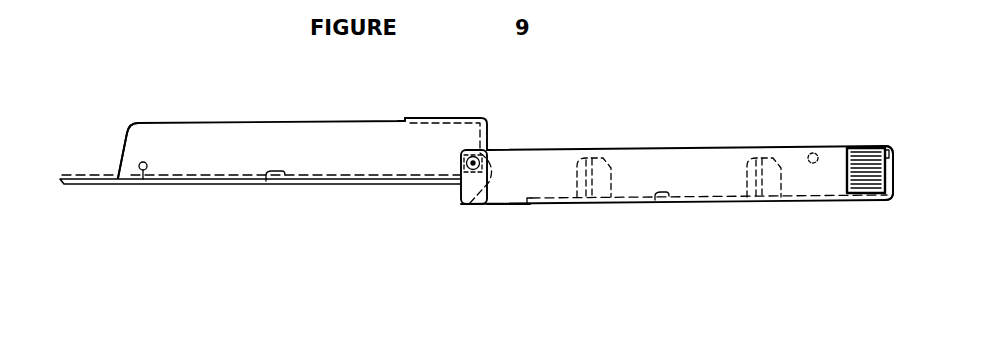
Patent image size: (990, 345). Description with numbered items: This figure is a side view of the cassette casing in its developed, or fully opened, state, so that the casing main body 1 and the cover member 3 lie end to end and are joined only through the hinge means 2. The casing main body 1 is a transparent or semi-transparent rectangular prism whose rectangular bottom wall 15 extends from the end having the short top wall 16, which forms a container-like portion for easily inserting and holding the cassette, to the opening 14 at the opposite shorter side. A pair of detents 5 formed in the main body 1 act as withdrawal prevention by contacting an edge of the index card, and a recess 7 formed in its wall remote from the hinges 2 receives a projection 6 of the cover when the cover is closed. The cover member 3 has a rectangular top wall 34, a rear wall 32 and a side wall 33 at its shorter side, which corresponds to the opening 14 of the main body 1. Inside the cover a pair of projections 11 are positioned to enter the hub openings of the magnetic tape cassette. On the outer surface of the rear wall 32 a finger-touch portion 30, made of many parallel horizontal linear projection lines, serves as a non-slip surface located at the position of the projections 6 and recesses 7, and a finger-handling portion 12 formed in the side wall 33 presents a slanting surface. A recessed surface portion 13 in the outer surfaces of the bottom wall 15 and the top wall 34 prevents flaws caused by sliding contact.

The casing main body 1 is at (223, 79).
The hinge means 2 is at (459, 184).
The cover member 3 is at (715, 114).
The detents 5 is at (483, 148).
The projections 6 is at (813, 152).
The recesses 7 is at (143, 183).
The projections 11 is at (602, 160).
The finger-handling portion 12 is at (358, 152).
The recessed surface portion 13 is at (472, 193).
The opening 14 is at (121, 146).
The bottom wall 15 is at (267, 183).
The top wall 16 is at (401, 117).
The finger-touch portion 30 is at (868, 160).
The rear wall 32 is at (503, 185).
The side wall 33 is at (897, 172).
The top wall 34 is at (664, 201).